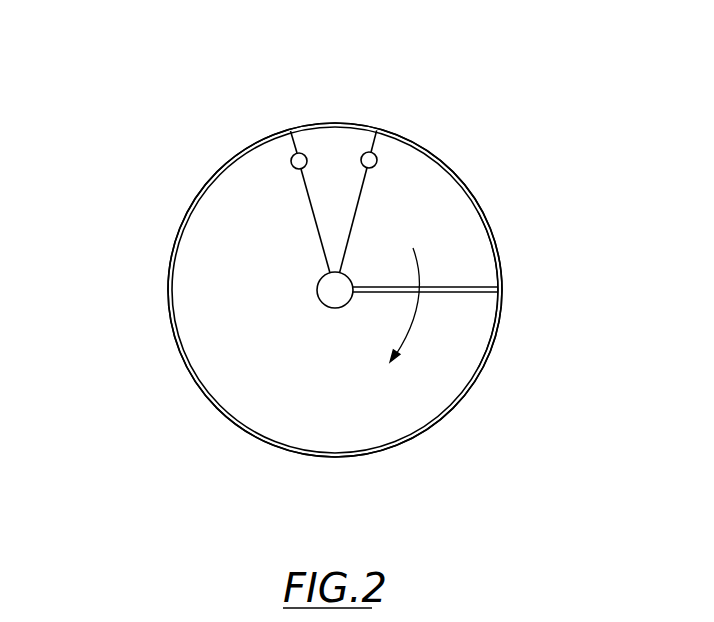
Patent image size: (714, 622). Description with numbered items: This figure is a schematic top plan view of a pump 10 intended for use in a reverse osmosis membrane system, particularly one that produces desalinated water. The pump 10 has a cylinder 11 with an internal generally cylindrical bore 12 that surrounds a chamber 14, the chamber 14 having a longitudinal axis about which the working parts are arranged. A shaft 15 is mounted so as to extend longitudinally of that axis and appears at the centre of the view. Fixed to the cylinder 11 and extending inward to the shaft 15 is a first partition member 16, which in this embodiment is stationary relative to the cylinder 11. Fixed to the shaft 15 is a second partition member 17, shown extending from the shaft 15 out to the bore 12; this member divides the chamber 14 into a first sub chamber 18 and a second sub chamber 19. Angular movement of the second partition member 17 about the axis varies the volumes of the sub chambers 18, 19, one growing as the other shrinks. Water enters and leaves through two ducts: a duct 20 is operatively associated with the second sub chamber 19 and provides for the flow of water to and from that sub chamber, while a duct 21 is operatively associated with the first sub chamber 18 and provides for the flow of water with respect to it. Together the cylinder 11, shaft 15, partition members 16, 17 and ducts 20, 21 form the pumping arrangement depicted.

The pump 10 is at (513, 158).
The cylinder 11 is at (437, 422).
The internal generally cylindrical bore 12 is at (175, 338).
The chamber 14 is at (492, 251).
The shaft 15 is at (335, 308).
The first partition member 16 is at (330, 140).
The second partition member 17 is at (470, 293).
The first sub chamber 18 is at (437, 213).
The second sub chamber 19 is at (271, 345).
The duct 20 is at (291, 161).
The duct 21 is at (377, 160).